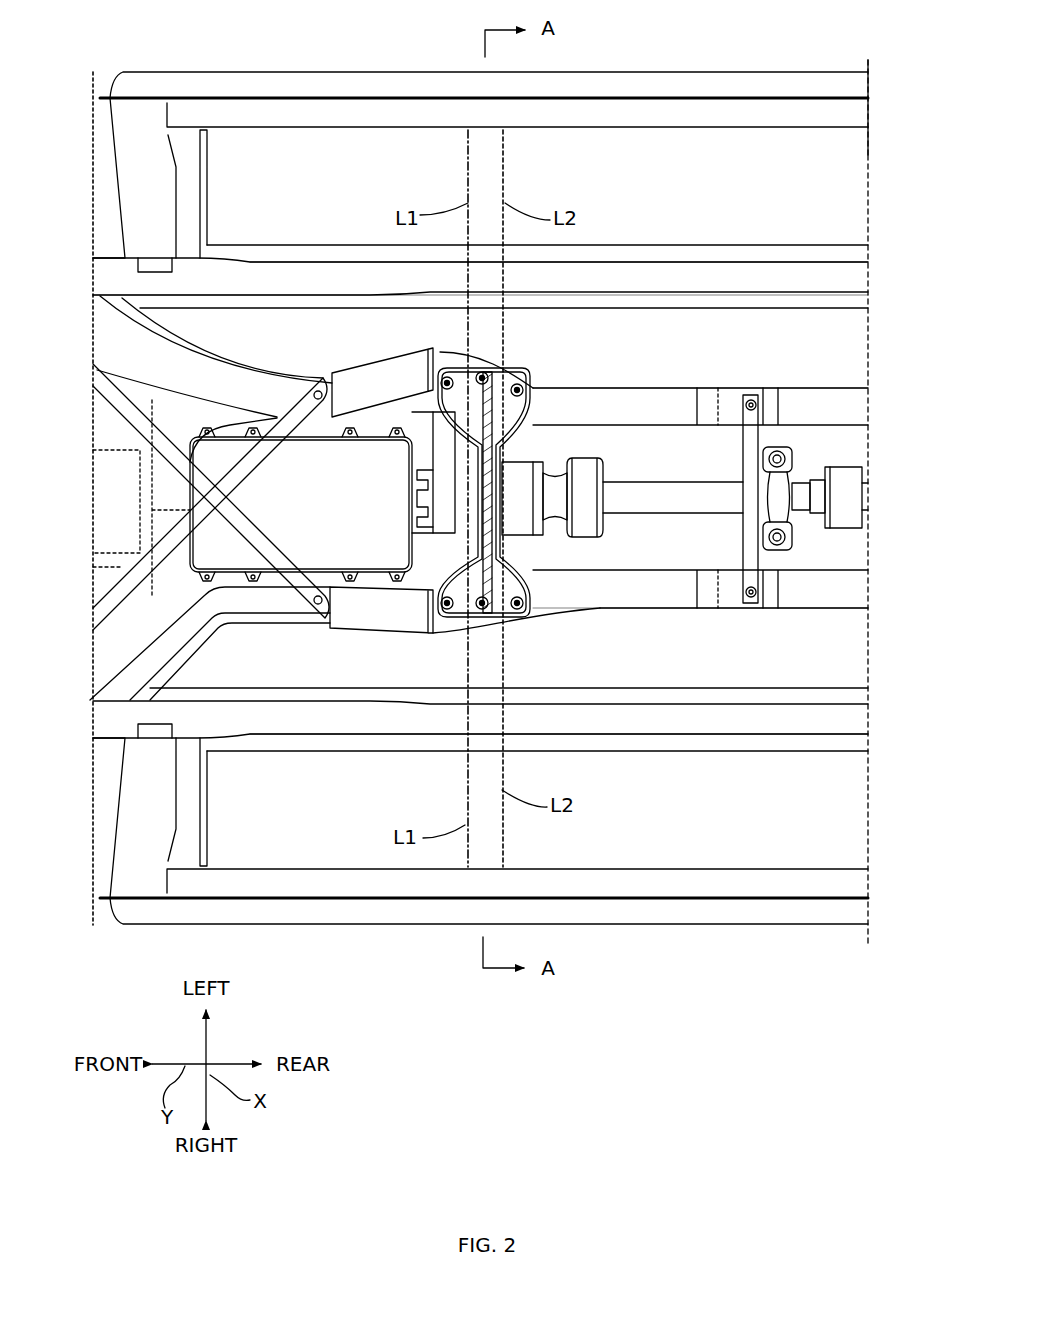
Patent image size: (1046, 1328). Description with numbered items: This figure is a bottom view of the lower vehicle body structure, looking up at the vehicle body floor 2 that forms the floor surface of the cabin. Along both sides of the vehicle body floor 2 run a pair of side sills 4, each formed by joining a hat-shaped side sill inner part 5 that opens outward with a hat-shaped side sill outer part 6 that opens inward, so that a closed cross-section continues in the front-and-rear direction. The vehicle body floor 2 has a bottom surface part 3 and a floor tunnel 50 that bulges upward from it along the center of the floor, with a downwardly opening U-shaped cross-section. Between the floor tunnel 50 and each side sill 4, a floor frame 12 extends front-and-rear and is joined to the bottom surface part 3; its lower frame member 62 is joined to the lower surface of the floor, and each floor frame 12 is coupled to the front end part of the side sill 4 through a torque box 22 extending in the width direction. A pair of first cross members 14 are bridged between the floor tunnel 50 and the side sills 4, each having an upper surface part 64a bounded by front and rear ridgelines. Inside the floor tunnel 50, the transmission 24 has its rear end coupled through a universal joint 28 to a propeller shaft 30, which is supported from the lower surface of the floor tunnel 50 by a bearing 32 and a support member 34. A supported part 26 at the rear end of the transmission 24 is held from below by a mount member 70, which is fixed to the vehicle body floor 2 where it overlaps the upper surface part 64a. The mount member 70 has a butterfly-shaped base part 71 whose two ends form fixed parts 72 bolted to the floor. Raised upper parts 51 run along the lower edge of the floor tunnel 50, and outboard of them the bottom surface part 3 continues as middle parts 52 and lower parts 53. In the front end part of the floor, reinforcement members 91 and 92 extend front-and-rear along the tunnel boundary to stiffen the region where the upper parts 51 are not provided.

The vehicle body floor 2 is at (847, 330).
The bottom surface part 3 is at (480, 328).
The side sill 4 is at (817, 72).
The side sill inner part 5 is at (657, 113).
The side sill outer part 6 is at (657, 83).
The floor frame 12 is at (797, 243).
The first cross member 14 is at (523, 148).
The torque box 22 is at (138, 181).
The transmission 24 is at (110, 495).
The supported part 26 is at (450, 560).
The universal joint 28 is at (588, 530).
The propeller shaft 30 is at (675, 500).
The bearing 32 is at (790, 487).
The support member 34 is at (778, 503).
The floor tunnel 50 is at (700, 498).
The upper part 51 is at (856, 410).
The middle part 52 is at (856, 372).
The lower part 53 is at (858, 168).
The lower frame member 62 is at (693, 260).
The upper surface part 64a is at (505, 183).
The mount member 70 is at (510, 437).
The base part 71 is at (513, 455).
The fixed part 72 is at (505, 368).
The reinforcement member 91 is at (360, 382).
The reinforcement member 92 is at (255, 390).